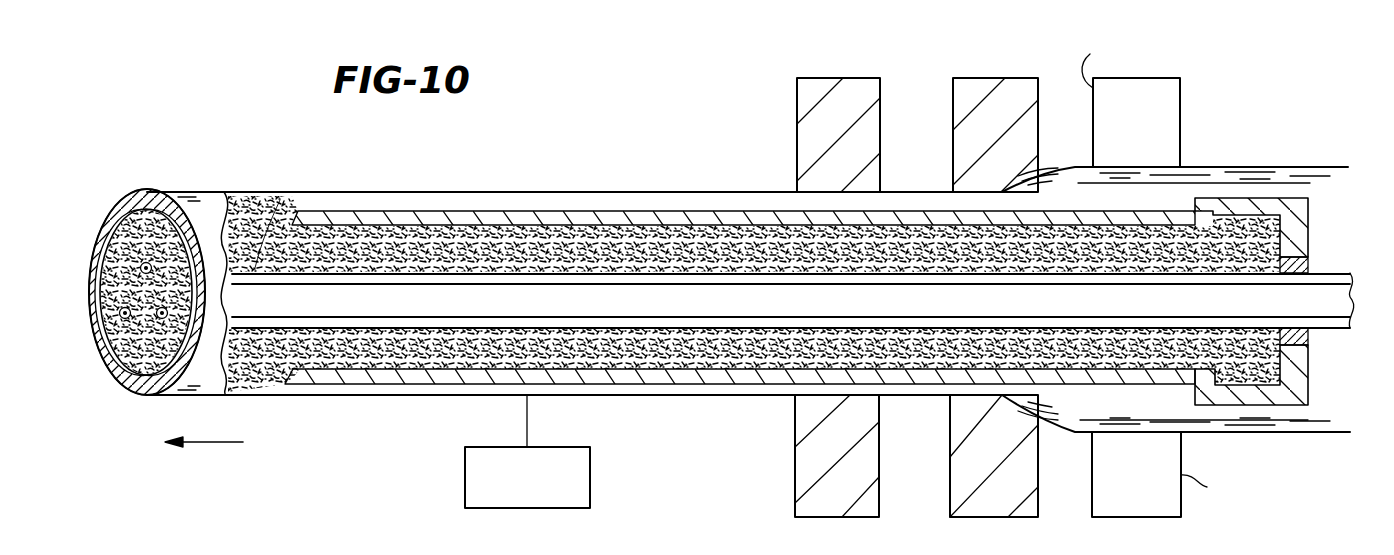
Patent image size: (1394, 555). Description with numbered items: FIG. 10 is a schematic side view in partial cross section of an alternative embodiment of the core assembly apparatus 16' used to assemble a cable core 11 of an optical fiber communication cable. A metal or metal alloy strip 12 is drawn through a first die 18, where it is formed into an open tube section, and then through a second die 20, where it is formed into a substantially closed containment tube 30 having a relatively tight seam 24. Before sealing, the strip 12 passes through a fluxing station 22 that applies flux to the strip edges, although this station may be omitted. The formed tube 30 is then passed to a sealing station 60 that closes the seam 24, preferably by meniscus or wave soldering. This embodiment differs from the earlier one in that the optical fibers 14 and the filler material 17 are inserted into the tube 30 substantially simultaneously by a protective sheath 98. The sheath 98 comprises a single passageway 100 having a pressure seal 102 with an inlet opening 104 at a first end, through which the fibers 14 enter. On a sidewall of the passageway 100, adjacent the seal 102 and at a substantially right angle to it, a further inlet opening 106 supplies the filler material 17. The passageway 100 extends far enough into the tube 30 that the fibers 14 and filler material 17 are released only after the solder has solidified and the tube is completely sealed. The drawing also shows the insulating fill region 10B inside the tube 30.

The insulating fill material 10B is at (277, 240).
The cable core 11 is at (143, 160).
The metal strip 12 is at (1300, 196).
The optical fibers 14 is at (157, 309).
The core assembly apparatus 16' is at (606, 138).
The filler material 17 is at (137, 265).
The first die 18 is at (968, 78).
The second die 20 is at (843, 78).
The fluxing station 22 is at (1135, 118).
The seam 24 is at (108, 381).
The containment tube 30 is at (193, 192).
The sealing station 60 is at (588, 449).
The protective sheath 98 is at (466, 211).
The passageway 100 is at (1308, 408).
The pressure seal 102 is at (1309, 260).
The inlet opening 104 is at (1309, 336).
The inlet opening 106 is at (1248, 196).